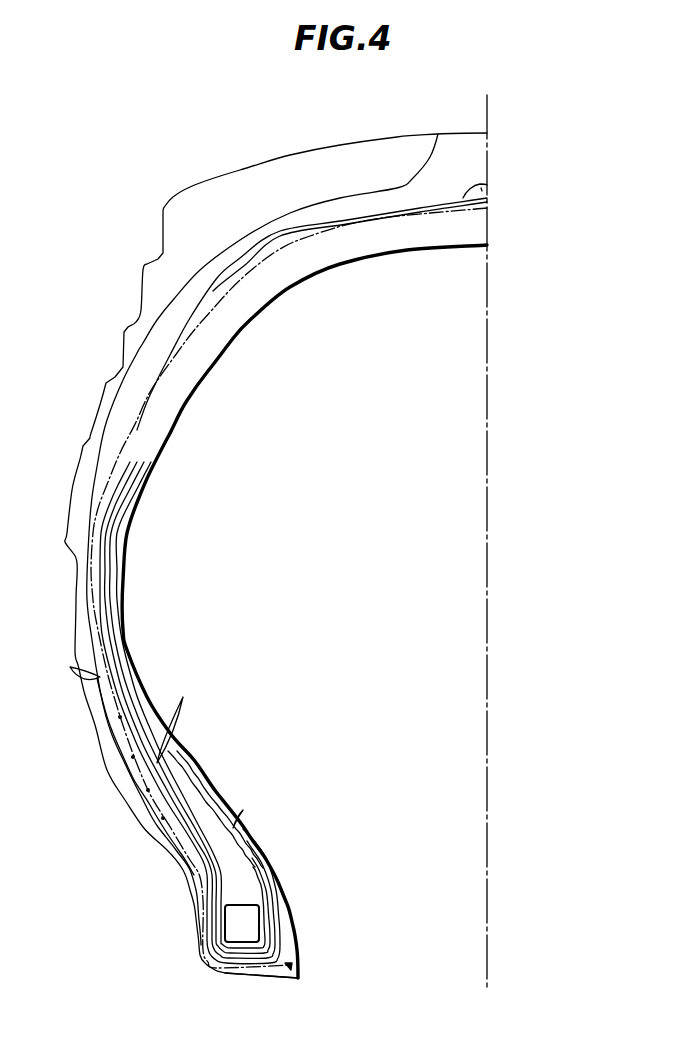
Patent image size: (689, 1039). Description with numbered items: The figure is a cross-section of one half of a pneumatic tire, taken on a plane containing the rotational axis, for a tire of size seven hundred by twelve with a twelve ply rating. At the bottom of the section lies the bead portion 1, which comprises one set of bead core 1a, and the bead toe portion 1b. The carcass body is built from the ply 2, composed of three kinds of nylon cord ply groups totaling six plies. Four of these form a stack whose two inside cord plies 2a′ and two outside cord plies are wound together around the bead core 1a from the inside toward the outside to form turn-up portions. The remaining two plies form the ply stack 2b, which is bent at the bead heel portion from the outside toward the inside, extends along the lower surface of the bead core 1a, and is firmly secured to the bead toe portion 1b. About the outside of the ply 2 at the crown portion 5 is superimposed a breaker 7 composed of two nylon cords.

The bead portion 1 is at (267, 881).
The bead core 1a is at (238, 922).
The bead toe portion 1b is at (292, 956).
The ply 2 is at (107, 540).
The inside cord plies 2a′ is at (247, 797).
The ply stack 2b is at (72, 668).
The crown portion 5 is at (348, 157).
The breaker 7 is at (485, 186).